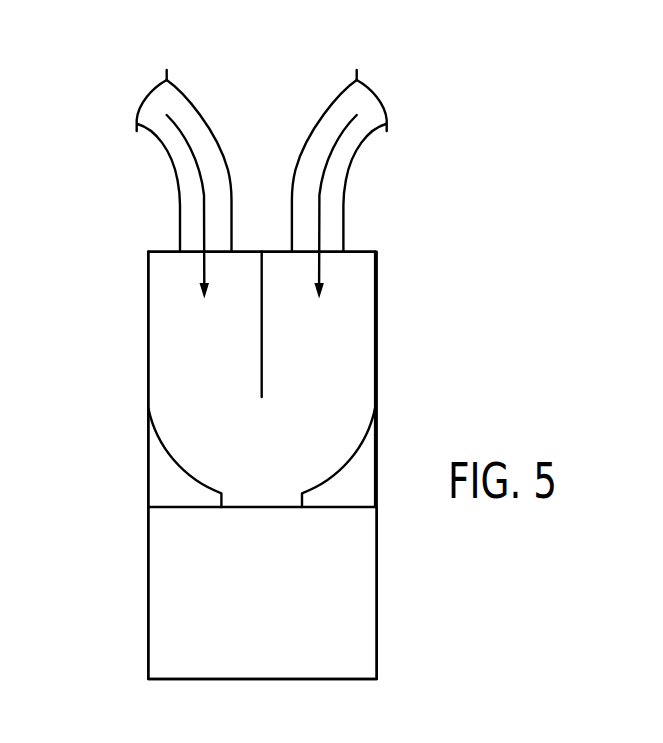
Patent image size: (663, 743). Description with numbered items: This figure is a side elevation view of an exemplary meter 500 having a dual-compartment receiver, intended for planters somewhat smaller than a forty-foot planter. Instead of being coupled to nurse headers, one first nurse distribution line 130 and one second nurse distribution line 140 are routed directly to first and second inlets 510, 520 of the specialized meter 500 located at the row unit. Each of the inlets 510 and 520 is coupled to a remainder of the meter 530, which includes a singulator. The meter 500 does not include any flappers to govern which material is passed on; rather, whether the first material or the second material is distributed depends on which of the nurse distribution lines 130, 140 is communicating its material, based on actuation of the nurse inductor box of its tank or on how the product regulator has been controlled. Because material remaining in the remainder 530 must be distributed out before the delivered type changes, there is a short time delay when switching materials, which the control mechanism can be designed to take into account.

The first nurse distribution line 130 is at (175, 162).
The second nurse distribution line 140 is at (349, 163).
The meter 500 is at (413, 602).
The first inlet 510 is at (158, 250).
The second inlet 520 is at (366, 250).
The remainder of the meter 530 is at (148, 615).